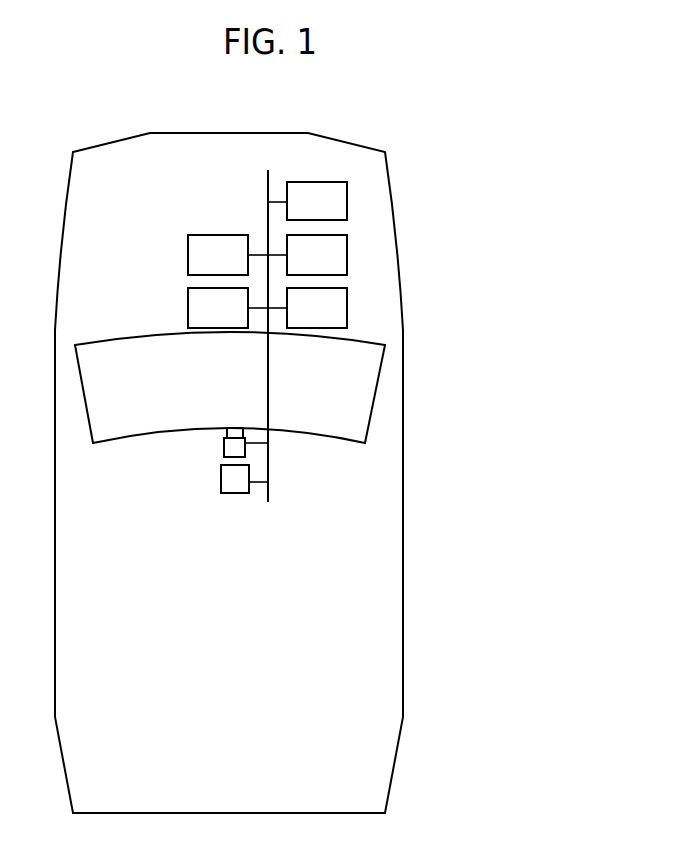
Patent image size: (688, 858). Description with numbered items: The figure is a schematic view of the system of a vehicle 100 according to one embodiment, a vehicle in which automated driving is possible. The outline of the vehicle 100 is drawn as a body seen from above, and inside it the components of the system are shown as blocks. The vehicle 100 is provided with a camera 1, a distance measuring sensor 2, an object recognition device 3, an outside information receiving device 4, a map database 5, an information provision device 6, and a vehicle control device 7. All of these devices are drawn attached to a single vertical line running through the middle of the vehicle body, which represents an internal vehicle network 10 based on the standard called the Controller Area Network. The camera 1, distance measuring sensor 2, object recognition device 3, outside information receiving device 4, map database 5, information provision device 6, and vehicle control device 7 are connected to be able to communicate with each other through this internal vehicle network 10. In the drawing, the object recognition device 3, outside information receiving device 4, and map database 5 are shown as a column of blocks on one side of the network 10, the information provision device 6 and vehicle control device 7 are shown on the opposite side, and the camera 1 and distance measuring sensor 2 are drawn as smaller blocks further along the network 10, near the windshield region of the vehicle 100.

The vehicle 100 is at (404, 695).
The internal vehicle network 10 is at (270, 385).
The camera 1 is at (224, 445).
The distance measuring sensor 2 is at (221, 482).
The object recognition device 3 is at (347, 200).
The outside information receiving device 4 is at (347, 255).
The map database 5 is at (347, 310).
The information provision device 6 is at (188, 255).
The vehicle control device 7 is at (188, 308).